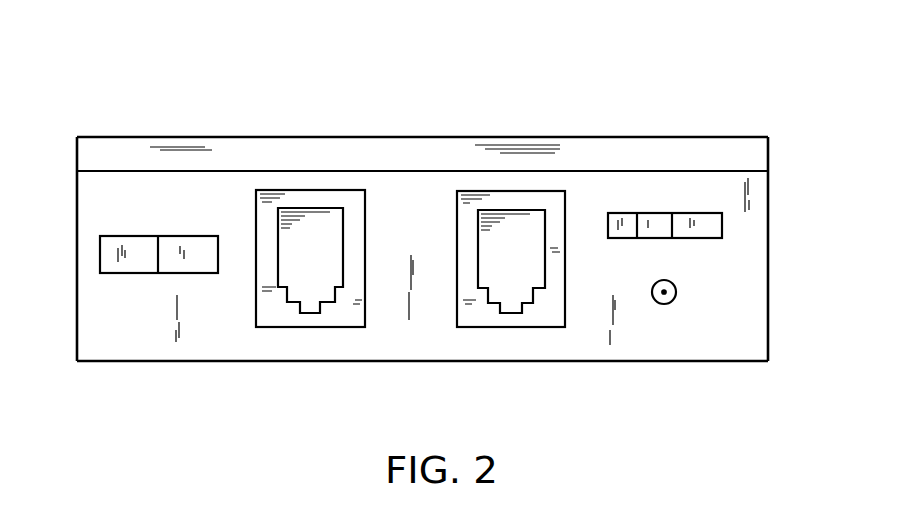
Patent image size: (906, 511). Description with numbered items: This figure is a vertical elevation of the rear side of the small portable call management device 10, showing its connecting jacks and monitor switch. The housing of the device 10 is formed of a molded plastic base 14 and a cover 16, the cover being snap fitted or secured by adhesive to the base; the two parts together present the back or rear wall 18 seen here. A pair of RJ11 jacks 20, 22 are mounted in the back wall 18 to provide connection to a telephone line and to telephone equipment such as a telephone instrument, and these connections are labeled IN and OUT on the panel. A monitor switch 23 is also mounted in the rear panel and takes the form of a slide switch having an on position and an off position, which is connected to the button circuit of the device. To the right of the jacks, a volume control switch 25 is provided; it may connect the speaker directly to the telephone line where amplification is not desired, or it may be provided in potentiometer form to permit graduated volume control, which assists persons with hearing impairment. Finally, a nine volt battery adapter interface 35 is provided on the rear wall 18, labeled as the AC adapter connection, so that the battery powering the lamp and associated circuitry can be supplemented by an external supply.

The call management device 10 is at (578, 79).
The base 14 is at (190, 362).
The cover 16 is at (288, 137).
The back wall 18 is at (748, 191).
The RJ11 jack 20 is at (365, 218).
The RJ11 jack 22 is at (565, 295).
The monitor switch 23 is at (125, 274).
The volume control switch 25 is at (722, 226).
The battery adapter interface 35 is at (675, 297).